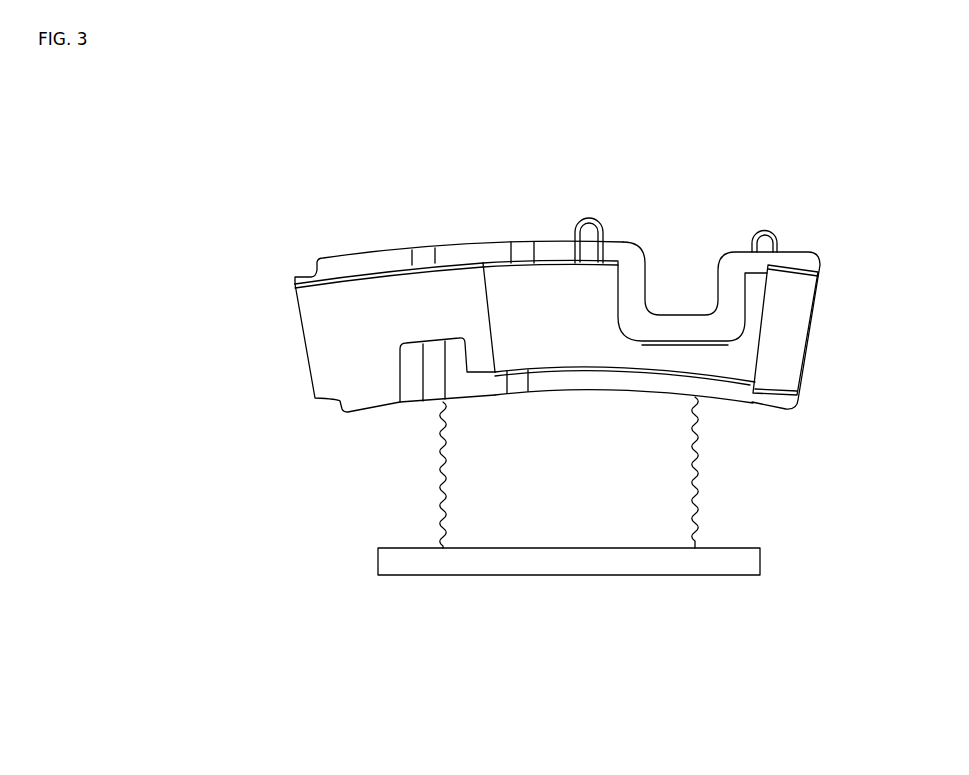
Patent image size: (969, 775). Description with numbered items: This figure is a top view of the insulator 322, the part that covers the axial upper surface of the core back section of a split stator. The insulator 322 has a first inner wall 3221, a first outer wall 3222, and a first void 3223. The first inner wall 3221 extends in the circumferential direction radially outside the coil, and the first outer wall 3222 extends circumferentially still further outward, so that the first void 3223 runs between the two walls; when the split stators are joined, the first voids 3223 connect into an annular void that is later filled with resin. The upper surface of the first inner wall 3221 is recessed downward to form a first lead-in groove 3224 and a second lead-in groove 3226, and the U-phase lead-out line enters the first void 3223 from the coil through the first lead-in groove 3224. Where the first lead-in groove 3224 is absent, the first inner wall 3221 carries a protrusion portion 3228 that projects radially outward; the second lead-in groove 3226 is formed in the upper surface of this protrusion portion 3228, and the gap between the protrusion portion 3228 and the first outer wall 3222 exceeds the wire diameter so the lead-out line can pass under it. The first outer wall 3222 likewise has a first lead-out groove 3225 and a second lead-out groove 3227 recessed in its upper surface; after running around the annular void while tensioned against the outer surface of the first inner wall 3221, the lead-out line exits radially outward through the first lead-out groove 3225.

The insulator 322 is at (182, 265).
The first inner wall 3221 is at (723, 392).
The first outer wall 3222 is at (735, 268).
The first void 3223 is at (332, 343).
The first lead-in groove 3224 is at (517, 390).
The first lead-out groove 3225 is at (553, 252).
The second lead-in groove 3226 is at (437, 392).
The second lead-out groove 3227 is at (425, 252).
The protrusion portion 3228 is at (413, 365).